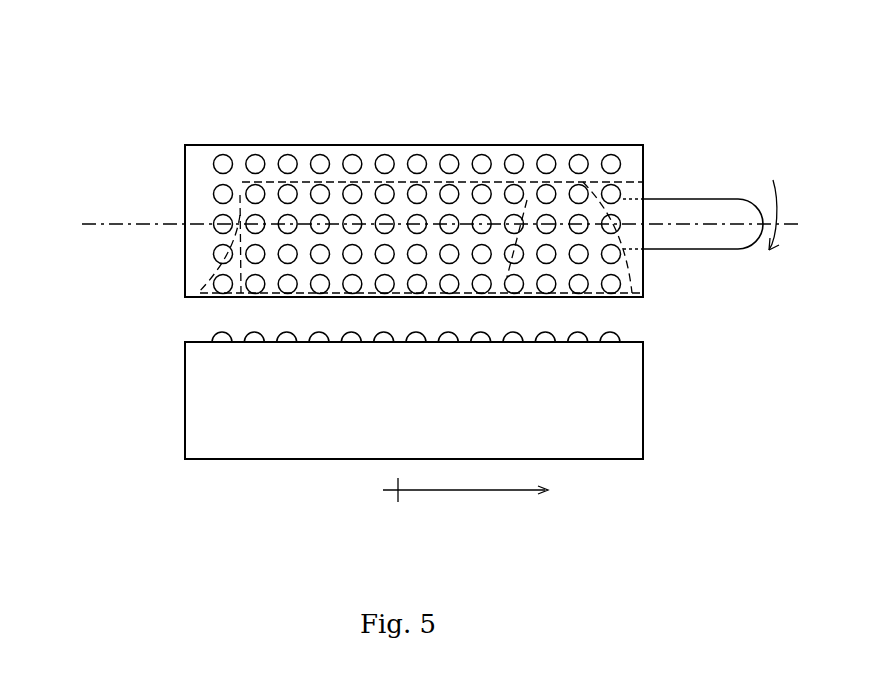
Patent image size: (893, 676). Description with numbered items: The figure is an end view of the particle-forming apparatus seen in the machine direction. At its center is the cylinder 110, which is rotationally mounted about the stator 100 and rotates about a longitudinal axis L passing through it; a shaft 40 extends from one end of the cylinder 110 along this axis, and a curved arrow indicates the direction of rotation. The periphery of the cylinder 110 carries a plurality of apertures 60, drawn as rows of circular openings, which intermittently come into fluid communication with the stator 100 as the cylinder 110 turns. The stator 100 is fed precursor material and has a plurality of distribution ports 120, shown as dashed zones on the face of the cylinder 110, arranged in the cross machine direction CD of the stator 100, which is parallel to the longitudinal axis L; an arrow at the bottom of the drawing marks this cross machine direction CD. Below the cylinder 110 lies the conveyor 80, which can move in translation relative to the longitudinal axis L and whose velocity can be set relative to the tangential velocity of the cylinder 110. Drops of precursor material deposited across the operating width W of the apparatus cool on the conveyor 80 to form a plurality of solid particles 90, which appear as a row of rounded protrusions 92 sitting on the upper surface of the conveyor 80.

The shaft 40 is at (708, 208).
The apertures 60 is at (291, 147).
The conveyor 80 is at (592, 419).
The solid particles 90 is at (398, 374).
The protrusions 92 is at (583, 332).
The stator 100 is at (490, 180).
The cylinder 110 is at (600, 146).
The distribution ports 120 is at (243, 198).
The longitudinal axis L is at (121, 222).
The operating width W is at (262, 300).
The cross machine direction CD is at (420, 490).